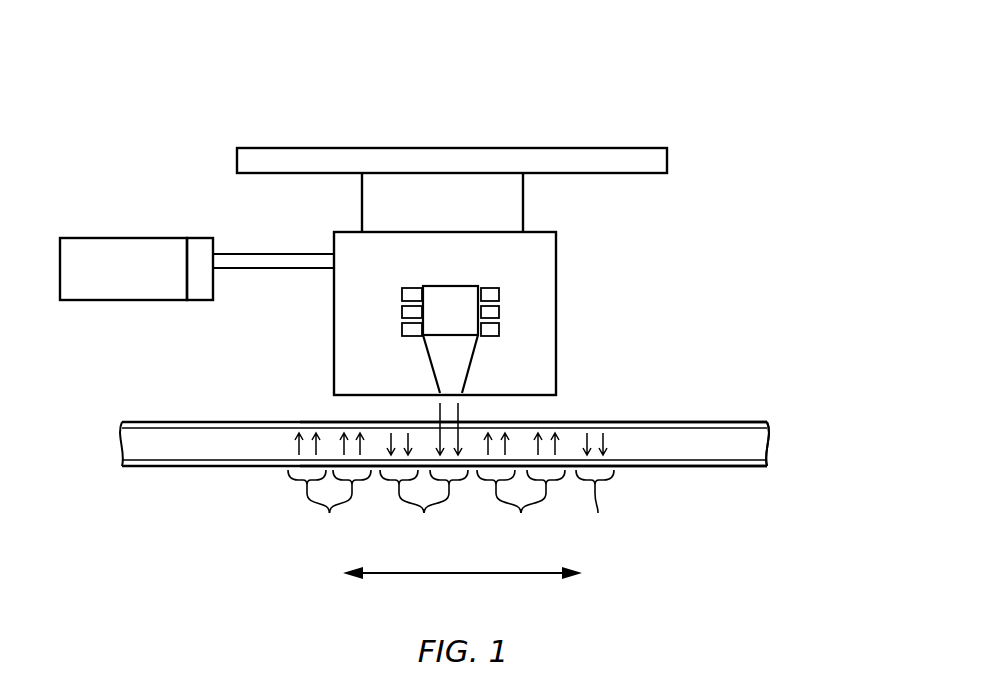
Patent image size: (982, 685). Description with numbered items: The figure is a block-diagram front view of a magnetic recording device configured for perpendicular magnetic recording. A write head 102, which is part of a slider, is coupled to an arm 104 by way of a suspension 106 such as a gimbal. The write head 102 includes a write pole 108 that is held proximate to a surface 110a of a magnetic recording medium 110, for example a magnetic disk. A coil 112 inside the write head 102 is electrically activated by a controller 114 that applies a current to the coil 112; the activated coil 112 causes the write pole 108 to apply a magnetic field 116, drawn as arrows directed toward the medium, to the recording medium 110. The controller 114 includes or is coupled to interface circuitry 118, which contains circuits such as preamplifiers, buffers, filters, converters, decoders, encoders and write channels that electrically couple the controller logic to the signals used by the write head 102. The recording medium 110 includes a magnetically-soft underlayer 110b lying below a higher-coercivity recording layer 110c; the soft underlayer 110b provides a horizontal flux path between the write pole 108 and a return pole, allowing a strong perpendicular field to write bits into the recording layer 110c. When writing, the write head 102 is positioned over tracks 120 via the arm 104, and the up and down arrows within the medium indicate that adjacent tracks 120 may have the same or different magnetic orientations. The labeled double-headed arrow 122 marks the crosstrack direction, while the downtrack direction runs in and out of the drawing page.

The write head 102 is at (556, 263).
The arm 104 is at (635, 153).
The suspension 106 is at (522, 207).
The write pole 108 is at (455, 373).
The magnetic recording medium 110 is at (662, 472).
The surface of the magnetic recording medium 110a is at (647, 422).
The magnetically-soft underlayer 110b is at (728, 445).
The recording layer 110c is at (750, 422).
The coil 112 is at (500, 312).
The controller 114 is at (120, 237).
The magnetic field 116 is at (458, 408).
The interface circuitry 118 is at (197, 237).
The tracks 120 is at (452, 486).
The crosstrack direction 122 is at (472, 572).